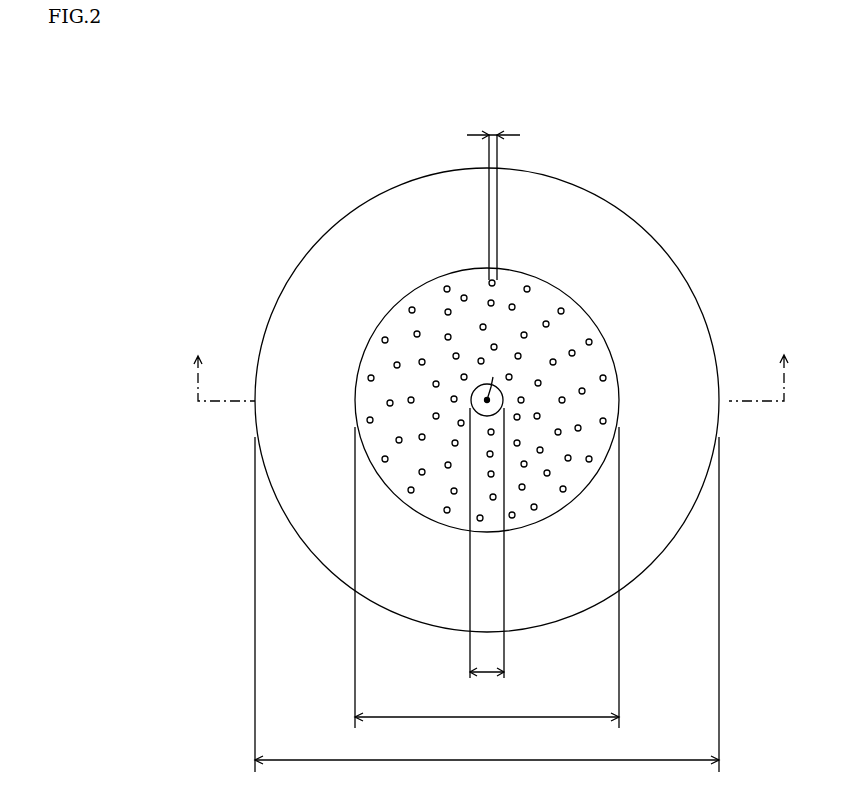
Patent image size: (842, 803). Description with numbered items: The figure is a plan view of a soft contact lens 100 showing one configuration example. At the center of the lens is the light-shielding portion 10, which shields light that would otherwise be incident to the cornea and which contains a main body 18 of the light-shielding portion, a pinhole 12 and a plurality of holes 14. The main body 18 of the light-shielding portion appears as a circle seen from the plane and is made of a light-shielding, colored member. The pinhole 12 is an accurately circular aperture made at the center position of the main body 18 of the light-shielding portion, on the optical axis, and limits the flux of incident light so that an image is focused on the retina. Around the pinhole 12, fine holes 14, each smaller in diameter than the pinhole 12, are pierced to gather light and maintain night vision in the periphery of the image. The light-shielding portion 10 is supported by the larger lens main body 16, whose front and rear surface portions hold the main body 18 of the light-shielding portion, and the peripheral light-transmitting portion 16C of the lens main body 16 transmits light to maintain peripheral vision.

The soft contact lens 100 is at (243, 136).
The light-shielding portion 10 is at (583, 325).
The pinhole 12 is at (500, 402).
The holes 14 is at (546, 324).
The lens main body 16 is at (620, 208).
The light-transmitting portion 16C is at (375, 212).
The main body of the light-shielding portion 18 is at (372, 353).